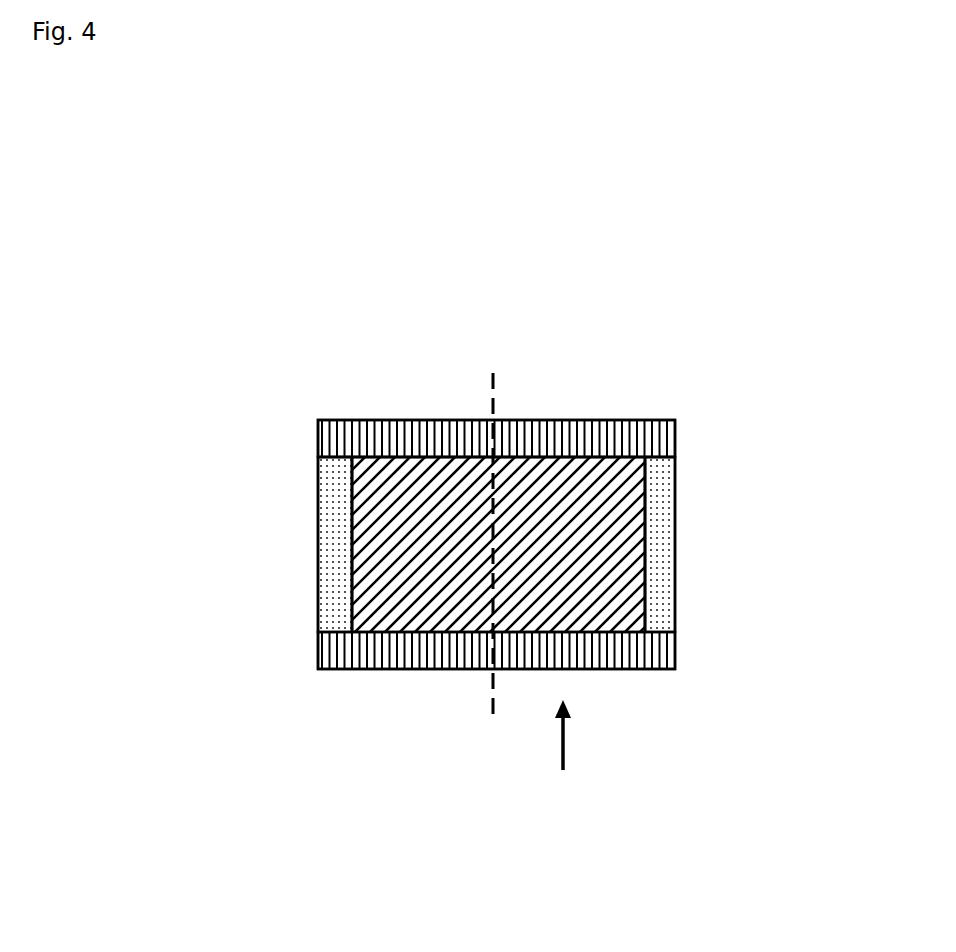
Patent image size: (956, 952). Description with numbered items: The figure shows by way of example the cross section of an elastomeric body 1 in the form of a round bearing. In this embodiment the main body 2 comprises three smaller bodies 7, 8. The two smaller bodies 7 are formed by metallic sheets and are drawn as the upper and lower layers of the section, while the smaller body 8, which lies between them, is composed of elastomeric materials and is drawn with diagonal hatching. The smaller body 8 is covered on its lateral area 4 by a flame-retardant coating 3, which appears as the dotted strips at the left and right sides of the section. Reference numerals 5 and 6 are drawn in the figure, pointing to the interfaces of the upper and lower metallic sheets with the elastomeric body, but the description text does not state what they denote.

The elastomeric body 1 is at (243, 365).
The main body 2 is at (535, 600).
The flame-retardant coating 3 is at (320, 512).
The lateral area 4 is at (664, 596).
The interface between cover layer and core 5 is at (349, 442).
The lower cover layer 6 is at (386, 645).
The smaller bodies 7 is at (539, 430).
The smaller body 8 is at (391, 479).